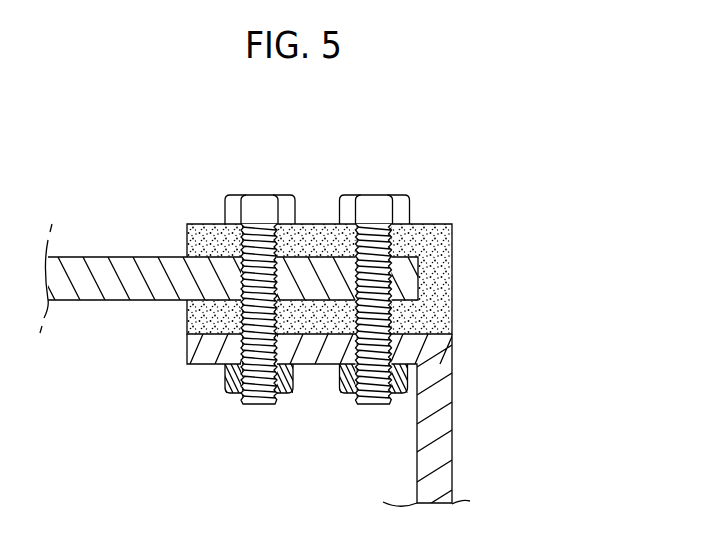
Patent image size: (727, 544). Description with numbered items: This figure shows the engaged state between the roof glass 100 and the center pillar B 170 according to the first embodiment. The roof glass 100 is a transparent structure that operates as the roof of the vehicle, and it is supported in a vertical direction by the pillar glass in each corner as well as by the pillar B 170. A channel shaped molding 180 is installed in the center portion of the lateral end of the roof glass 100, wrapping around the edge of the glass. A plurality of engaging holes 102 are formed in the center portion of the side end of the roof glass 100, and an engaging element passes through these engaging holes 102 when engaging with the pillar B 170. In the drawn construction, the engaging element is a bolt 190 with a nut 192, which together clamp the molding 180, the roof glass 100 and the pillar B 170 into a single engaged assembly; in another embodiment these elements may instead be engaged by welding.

The roof glass 100 is at (113, 268).
The engaging holes 102 is at (290, 272).
The pillar B 170 is at (437, 392).
The channel shaped molding 180 is at (438, 247).
The bolt 190 is at (260, 208).
The nut 192 is at (225, 382).